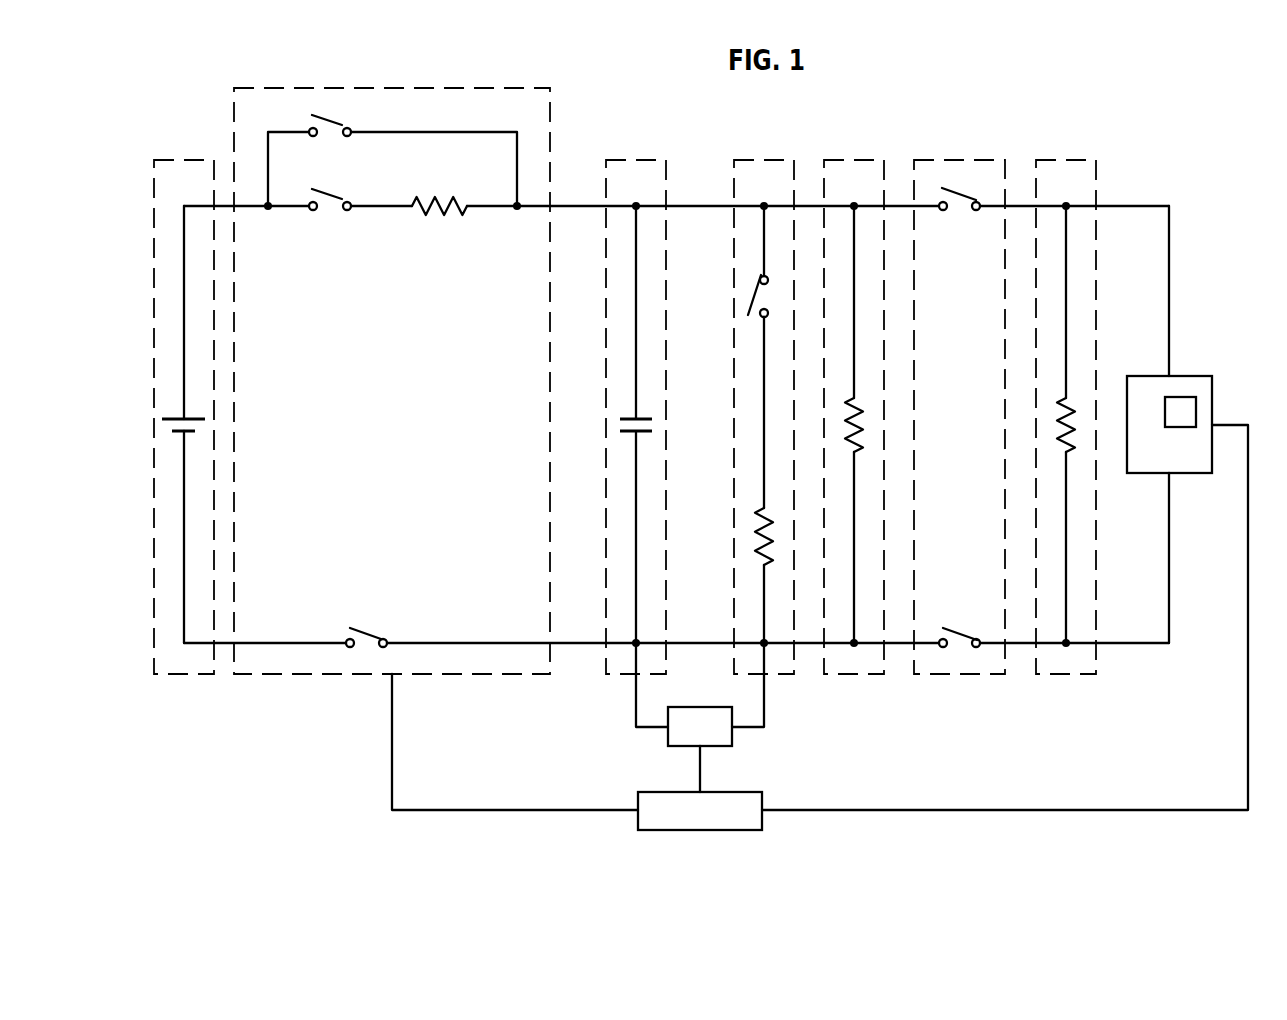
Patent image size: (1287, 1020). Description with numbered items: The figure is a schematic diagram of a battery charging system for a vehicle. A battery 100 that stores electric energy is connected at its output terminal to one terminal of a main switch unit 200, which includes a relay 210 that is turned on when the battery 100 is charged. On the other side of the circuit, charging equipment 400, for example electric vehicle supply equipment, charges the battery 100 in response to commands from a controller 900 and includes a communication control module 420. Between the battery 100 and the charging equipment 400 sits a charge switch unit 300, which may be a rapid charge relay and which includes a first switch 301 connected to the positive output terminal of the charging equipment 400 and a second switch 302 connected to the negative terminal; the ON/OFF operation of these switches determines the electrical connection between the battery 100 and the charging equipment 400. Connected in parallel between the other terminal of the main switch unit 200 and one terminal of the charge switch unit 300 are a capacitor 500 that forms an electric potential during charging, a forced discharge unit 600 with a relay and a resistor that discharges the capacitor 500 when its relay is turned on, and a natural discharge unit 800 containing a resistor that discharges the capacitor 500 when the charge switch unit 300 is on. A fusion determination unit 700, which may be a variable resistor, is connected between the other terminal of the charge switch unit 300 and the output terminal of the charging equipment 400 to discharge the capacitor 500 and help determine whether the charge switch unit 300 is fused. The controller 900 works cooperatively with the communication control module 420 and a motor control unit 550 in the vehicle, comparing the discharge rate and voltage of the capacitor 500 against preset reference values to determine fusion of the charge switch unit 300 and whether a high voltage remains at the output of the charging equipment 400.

The battery 100 is at (195, 675).
The main switch unit 200 is at (468, 677).
The relay 210 is at (332, 120).
The charge switch unit 300 is at (997, 676).
The first switch 301 is at (963, 195).
The second switch 302 is at (960, 637).
The charging equipment 400 is at (1195, 475).
The communication control module 420 is at (1184, 405).
The capacitor 500 is at (610, 677).
The motor control unit 550 is at (667, 740).
The forced discharge unit 600 is at (787, 675).
The fusion determination unit 700 is at (1073, 676).
The natural discharge unit 800 is at (865, 675).
The controller 900 is at (638, 822).